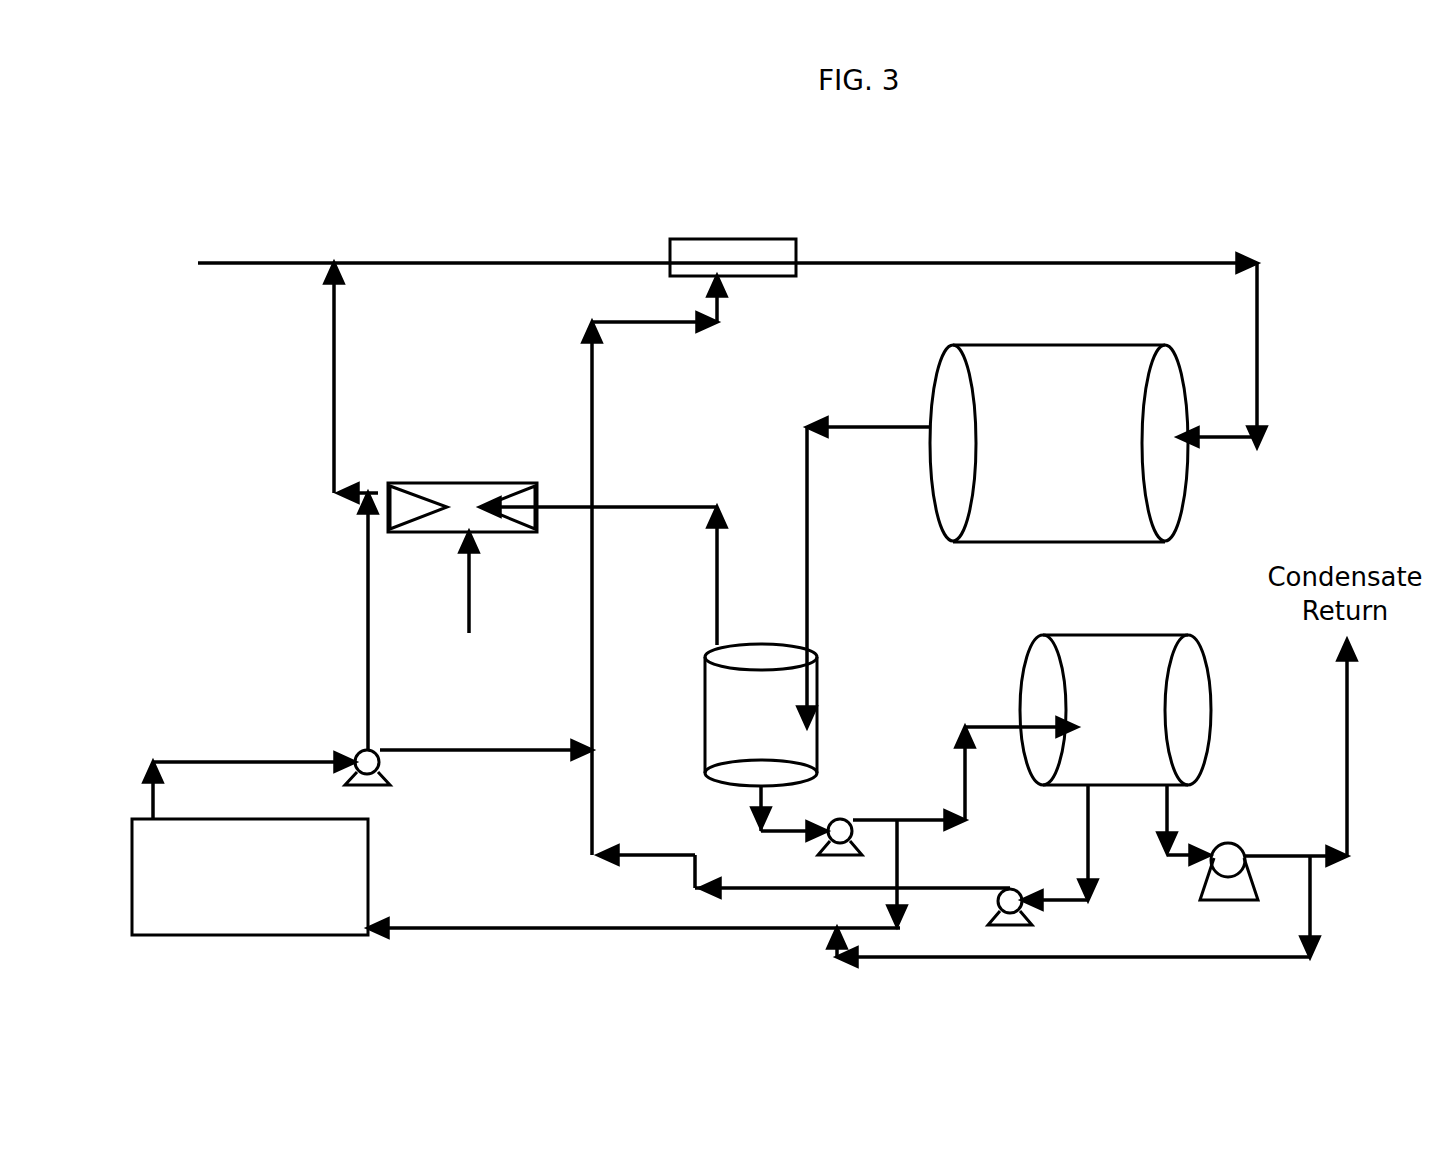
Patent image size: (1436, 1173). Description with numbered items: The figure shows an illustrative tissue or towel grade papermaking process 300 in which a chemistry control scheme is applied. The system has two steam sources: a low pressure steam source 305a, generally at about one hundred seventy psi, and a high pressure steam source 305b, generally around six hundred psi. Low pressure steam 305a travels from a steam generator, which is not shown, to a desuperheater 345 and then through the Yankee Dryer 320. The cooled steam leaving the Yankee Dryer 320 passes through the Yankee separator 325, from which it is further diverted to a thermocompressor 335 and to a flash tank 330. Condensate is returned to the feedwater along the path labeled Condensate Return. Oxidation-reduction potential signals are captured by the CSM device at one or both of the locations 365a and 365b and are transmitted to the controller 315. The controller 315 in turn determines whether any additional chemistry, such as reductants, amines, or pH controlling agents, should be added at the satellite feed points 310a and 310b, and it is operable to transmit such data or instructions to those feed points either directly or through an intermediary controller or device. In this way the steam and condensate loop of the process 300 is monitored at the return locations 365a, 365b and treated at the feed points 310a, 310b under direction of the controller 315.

The tissue or towel grade papermaking process 300 is at (1199, 172).
The low pressure steam source 305a is at (222, 258).
The high pressure steam source 305b is at (469, 610).
The satellite feed point 310a is at (368, 540).
The satellite feed point 310b is at (580, 750).
The controller 315 is at (368, 855).
The Yankee Dryer 320 is at (946, 344).
The Yankee separator 325 is at (818, 722).
The flash tank 330 is at (1022, 652).
The thermocompressor 335 is at (410, 483).
The desuperheater 345 is at (703, 239).
The location 365a is at (900, 835).
The location 365b is at (1312, 878).